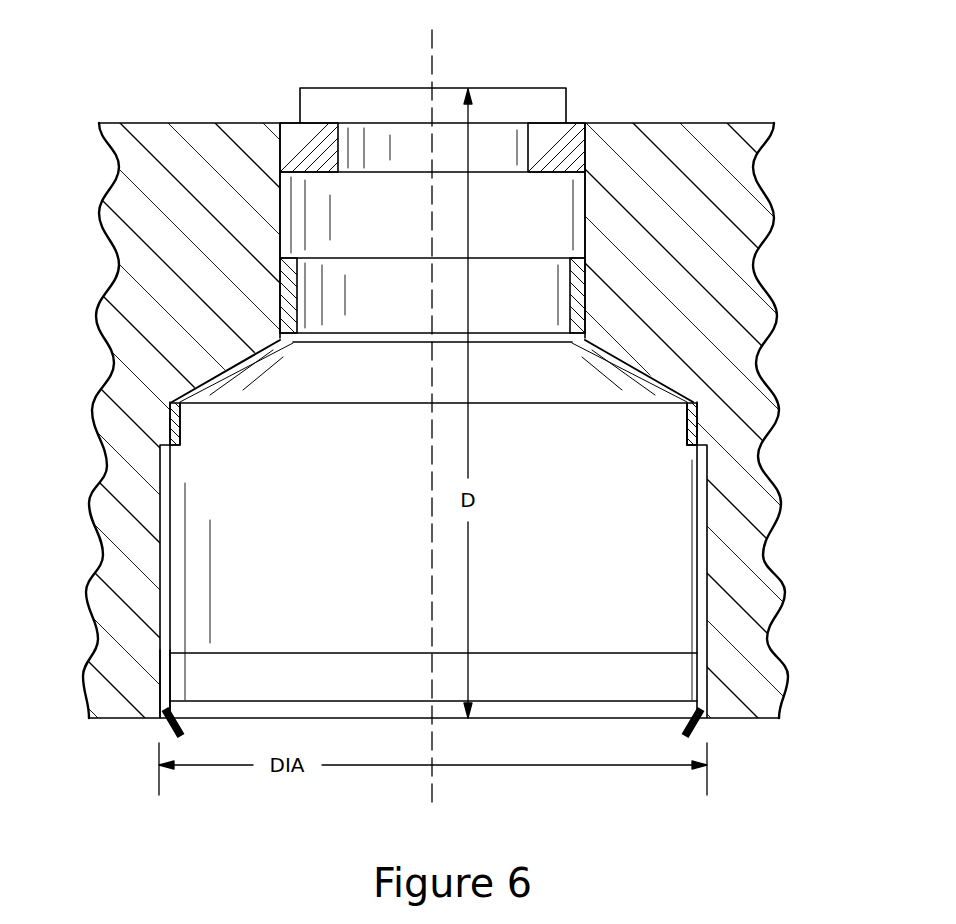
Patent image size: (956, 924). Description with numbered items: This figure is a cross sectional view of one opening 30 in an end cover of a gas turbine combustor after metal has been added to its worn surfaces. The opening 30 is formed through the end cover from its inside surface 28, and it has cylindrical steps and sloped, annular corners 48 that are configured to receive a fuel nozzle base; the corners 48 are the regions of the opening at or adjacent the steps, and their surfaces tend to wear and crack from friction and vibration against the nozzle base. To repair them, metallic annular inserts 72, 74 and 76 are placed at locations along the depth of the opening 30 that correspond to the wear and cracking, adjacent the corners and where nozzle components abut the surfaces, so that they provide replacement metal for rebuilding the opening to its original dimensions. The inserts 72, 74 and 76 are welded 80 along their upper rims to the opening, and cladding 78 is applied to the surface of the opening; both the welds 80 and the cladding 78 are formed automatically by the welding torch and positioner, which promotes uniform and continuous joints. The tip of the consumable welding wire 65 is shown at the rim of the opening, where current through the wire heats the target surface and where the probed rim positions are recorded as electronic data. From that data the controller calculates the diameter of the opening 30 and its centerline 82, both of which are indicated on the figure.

The inside surface 28 is at (738, 737).
The opening 30 is at (556, 561).
The sloped, annular corner 48 is at (180, 403).
The consumable welding wire 65 is at (167, 725).
The insert 72 is at (566, 110).
The insert 74 is at (585, 270).
The insert 76 is at (690, 417).
The cladding 78 is at (168, 673).
The weld 80 is at (280, 172).
The centerline 82 is at (433, 788).